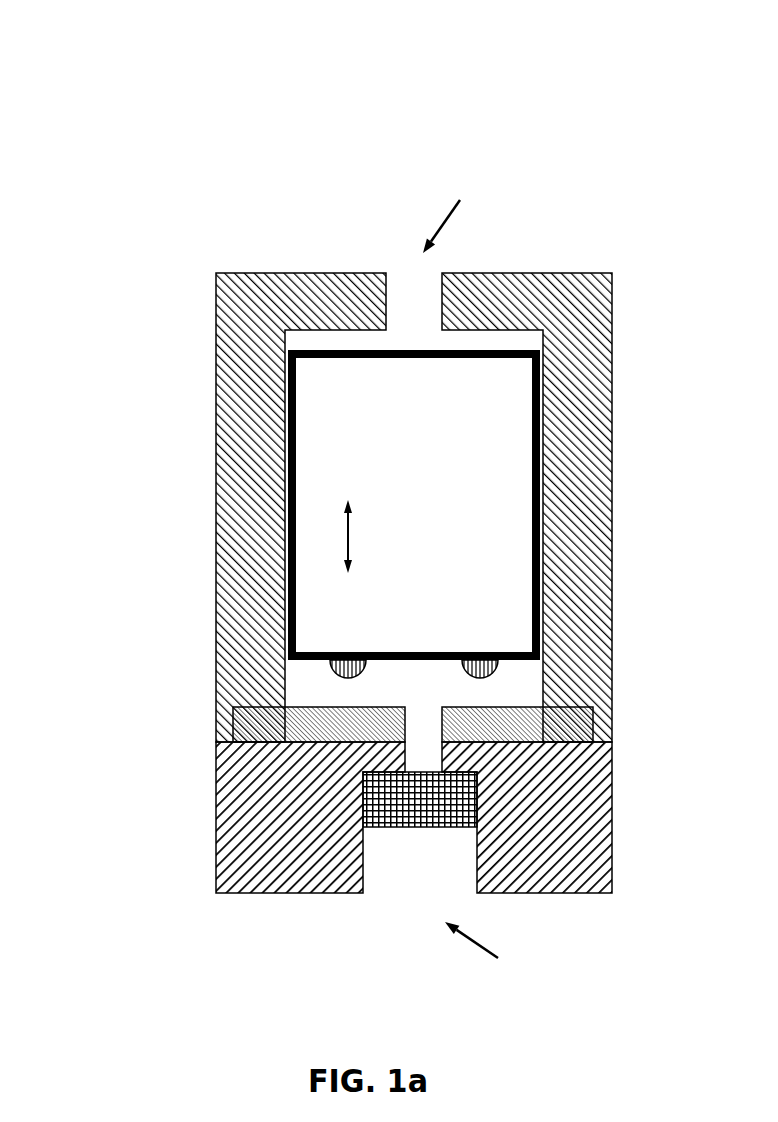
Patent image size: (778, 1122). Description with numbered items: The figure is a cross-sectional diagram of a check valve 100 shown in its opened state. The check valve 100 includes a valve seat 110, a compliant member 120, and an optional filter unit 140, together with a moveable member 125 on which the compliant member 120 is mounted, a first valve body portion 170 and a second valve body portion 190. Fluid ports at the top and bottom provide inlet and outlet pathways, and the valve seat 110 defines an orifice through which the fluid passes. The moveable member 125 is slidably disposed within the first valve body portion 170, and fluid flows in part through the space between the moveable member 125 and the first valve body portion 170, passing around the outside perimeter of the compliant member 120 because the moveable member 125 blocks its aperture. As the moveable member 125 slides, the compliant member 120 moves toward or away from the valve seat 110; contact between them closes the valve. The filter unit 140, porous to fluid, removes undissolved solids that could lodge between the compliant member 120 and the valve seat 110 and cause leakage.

The check valve 100 is at (134, 95).
The first valve body portion 170 is at (612, 483).
The moveable member 125 is at (448, 469).
The compliant member 120 is at (477, 655).
The valve seat 110 is at (536, 739).
The second valve body portion 190 is at (311, 832).
The filter unit 140 is at (403, 828).